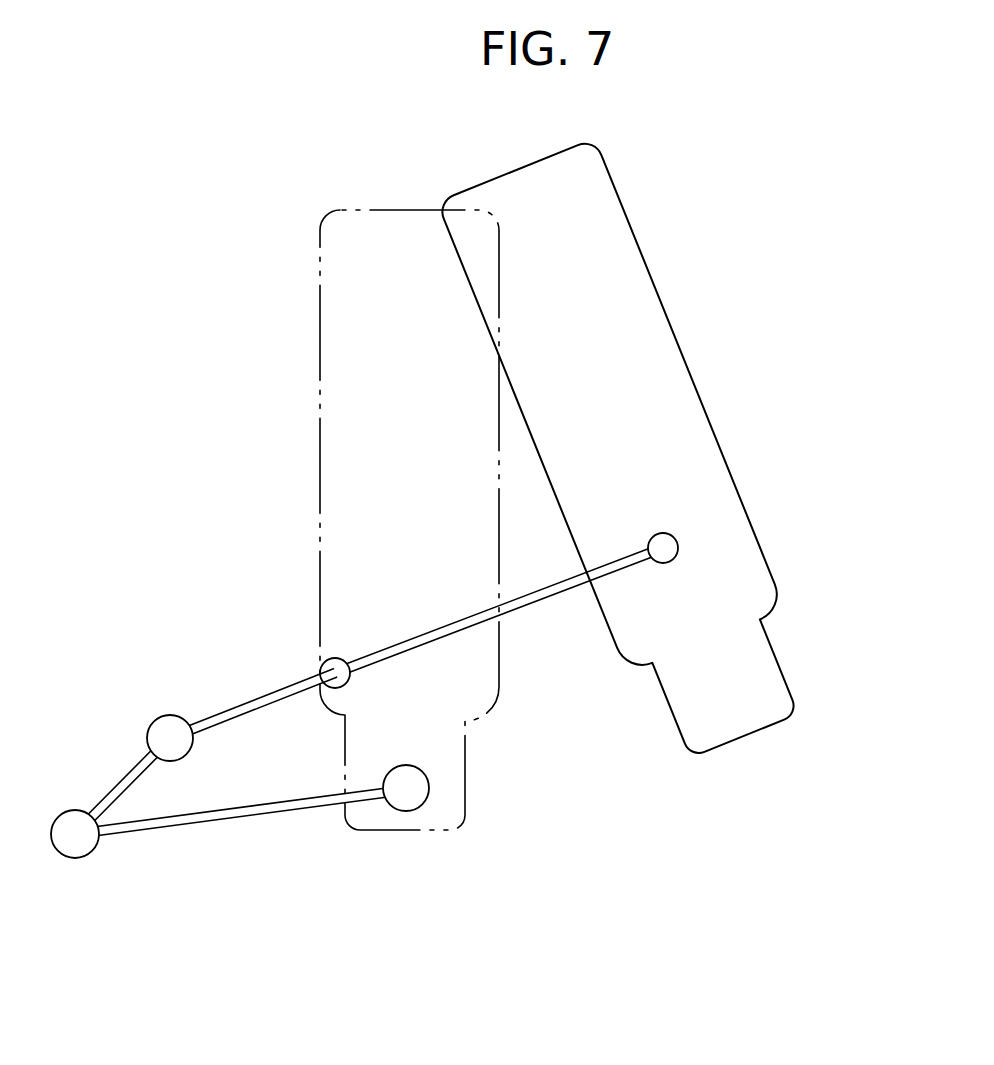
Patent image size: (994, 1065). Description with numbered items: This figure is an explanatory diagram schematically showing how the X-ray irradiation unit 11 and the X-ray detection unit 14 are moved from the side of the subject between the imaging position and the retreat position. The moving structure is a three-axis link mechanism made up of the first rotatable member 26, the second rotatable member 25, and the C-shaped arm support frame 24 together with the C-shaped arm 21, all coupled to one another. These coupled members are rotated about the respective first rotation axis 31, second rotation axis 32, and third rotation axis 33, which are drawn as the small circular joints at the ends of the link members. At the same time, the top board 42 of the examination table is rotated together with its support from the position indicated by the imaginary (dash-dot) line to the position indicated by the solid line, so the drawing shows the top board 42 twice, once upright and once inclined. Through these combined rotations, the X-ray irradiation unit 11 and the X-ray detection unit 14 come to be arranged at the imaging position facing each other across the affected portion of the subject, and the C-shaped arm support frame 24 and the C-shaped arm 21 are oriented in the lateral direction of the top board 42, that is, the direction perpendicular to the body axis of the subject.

The top board 42 is at (345, 328).
The X-ray irradiation unit 11 is at (625, 502).
The X-ray detection unit 14 is at (659, 545).
The C-shaped arm 21 is at (438, 632).
The C-shaped arm support frame 24 is at (255, 702).
The second rotatable member 25 is at (128, 772).
The first rotatable member 26 is at (227, 818).
The first rotation axis 31 is at (403, 790).
The second rotation axis 32 is at (80, 843).
The third rotation axis 33 is at (173, 733).